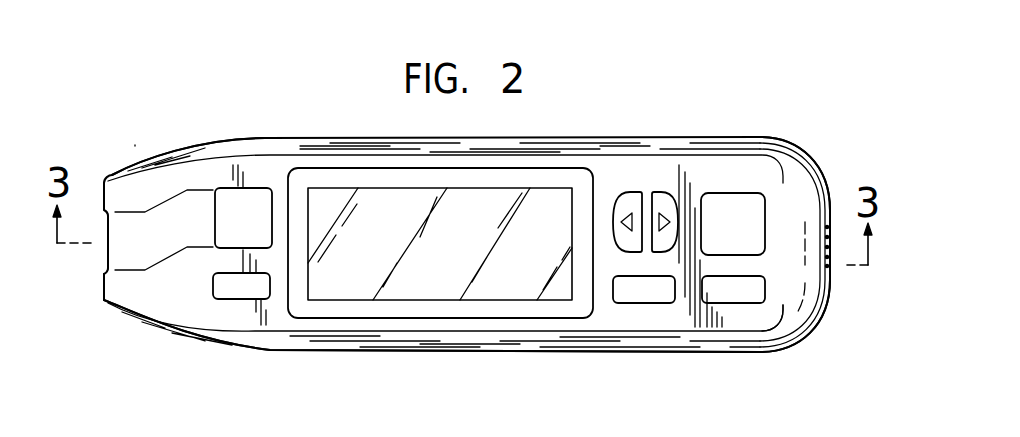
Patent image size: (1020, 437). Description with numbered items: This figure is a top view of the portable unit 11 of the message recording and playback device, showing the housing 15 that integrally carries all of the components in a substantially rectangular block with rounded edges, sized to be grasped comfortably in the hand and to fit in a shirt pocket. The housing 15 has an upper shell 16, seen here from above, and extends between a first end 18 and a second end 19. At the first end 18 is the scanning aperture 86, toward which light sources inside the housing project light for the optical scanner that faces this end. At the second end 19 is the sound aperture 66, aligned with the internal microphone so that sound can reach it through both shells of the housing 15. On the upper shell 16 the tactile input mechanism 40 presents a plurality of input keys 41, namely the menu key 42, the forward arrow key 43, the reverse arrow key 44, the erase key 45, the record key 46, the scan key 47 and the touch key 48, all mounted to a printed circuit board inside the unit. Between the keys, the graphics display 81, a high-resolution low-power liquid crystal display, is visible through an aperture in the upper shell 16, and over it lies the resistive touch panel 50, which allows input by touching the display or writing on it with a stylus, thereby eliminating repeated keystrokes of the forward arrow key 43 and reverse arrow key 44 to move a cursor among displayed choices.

The portable unit 11 is at (625, 134).
The housing 15 is at (328, 351).
The upper shell 16 is at (281, 168).
The first end 18 is at (101, 294).
The second end 19 is at (829, 203).
The tactile input mechanism 40 is at (673, 311).
The input keys 41 is at (757, 307).
The menu key 42 is at (732, 303).
The forward arrow key 43 is at (660, 200).
The reverse arrow key 44 is at (623, 200).
The erase key 45 is at (633, 303).
The record key 46 is at (743, 203).
The scan key 47 is at (230, 192).
The touch key 48 is at (235, 300).
The resistive touch panel 50 is at (373, 200).
The sound aperture 66 is at (832, 258).
The graphics display 81 is at (413, 200).
The scanning aperture 86 is at (103, 217).